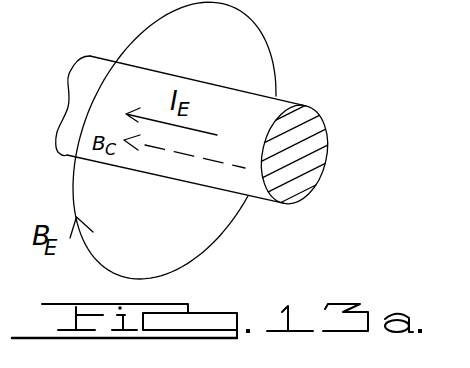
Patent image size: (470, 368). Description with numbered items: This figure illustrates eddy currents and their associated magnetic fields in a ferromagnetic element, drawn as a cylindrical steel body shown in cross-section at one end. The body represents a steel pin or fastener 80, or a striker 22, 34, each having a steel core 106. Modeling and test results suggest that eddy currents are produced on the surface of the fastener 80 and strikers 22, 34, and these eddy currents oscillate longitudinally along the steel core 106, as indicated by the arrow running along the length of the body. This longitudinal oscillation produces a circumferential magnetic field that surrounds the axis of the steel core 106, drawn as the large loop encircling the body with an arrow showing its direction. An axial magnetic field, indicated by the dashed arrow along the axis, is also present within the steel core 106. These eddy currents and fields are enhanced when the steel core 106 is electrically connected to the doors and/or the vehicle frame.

The steel pin or fastener 80 is at (243, 115).
The striker 22 is at (243, 115).
The striker 34 is at (243, 115).
The steel core 106 is at (306, 163).